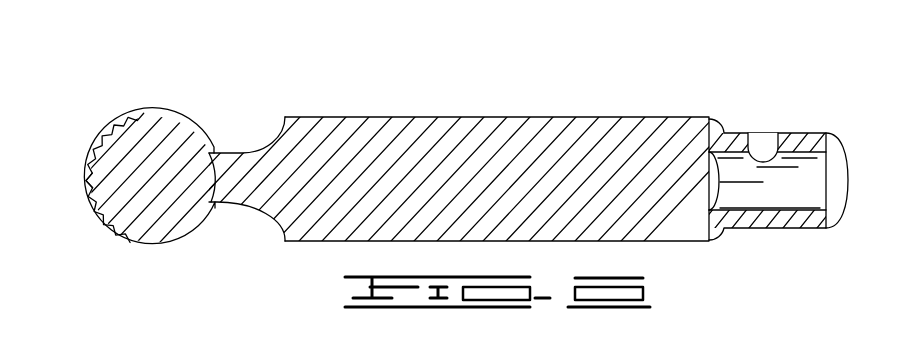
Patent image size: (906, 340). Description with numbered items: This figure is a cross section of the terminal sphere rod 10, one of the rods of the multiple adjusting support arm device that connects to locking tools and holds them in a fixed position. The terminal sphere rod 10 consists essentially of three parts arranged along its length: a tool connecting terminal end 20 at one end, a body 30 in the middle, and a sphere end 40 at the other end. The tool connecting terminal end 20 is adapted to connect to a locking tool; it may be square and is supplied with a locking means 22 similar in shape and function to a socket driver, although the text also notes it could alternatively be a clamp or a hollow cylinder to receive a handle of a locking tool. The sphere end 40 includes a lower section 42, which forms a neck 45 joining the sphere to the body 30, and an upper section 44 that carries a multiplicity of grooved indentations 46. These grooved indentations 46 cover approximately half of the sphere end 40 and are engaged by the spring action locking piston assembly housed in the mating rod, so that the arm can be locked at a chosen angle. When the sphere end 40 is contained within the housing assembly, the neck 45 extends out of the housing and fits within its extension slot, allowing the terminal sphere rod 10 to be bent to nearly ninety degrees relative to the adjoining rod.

The terminal sphere rod 10 is at (440, 95).
The tool connecting terminal end 20 is at (767, 182).
The locking means 22 is at (758, 150).
The body 30 is at (617, 117).
The sphere end 40 is at (169, 188).
The lower section 42 is at (210, 130).
The upper section 44 is at (90, 185).
The neck 45 is at (239, 216).
The grooved indentations 46 is at (88, 200).